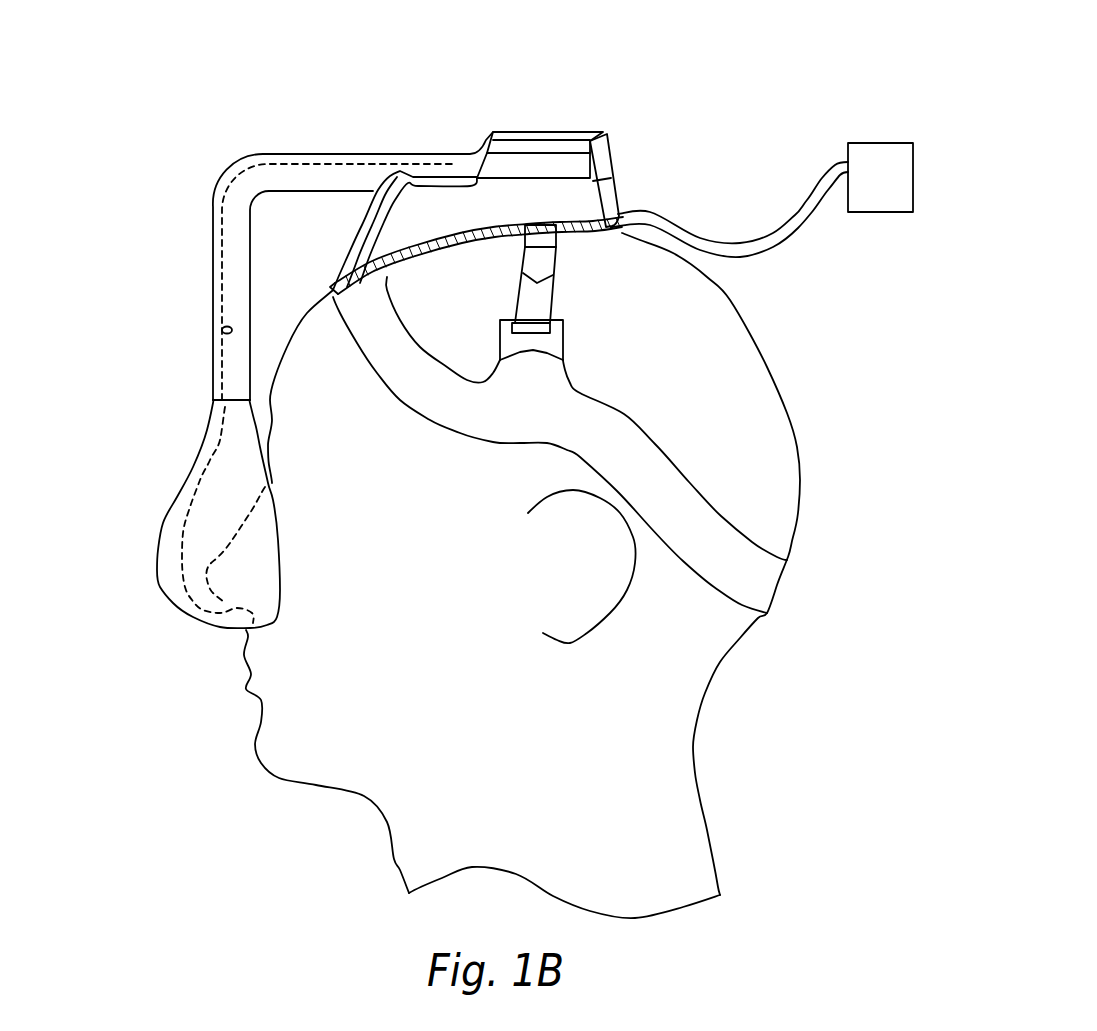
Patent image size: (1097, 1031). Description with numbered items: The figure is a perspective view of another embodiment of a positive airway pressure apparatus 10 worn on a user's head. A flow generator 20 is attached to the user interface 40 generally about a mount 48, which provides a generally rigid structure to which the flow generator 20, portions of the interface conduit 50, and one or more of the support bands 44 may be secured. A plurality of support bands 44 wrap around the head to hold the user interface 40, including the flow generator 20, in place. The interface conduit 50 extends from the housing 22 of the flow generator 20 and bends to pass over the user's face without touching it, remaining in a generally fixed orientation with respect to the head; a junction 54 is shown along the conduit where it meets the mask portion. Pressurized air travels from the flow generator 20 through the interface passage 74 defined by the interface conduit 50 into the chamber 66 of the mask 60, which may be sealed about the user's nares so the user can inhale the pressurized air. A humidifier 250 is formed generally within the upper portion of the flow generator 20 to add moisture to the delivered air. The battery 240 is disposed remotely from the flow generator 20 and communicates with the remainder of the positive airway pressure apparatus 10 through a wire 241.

The positive airway pressure apparatus 10 is at (684, 62).
The flow generator 20 is at (612, 185).
The housing 22 is at (510, 148).
The user interface 40 is at (215, 145).
The support bands 44 is at (522, 270).
The mount 48 is at (420, 255).
The interface conduit 50 is at (213, 214).
The tube junction 54 is at (248, 388).
The mask 60 is at (173, 558).
The chamber 66 is at (178, 512).
The interface passage 74 is at (343, 150).
The battery 240 is at (872, 190).
The wire 241 is at (723, 248).
The humidifier 250 is at (547, 160).